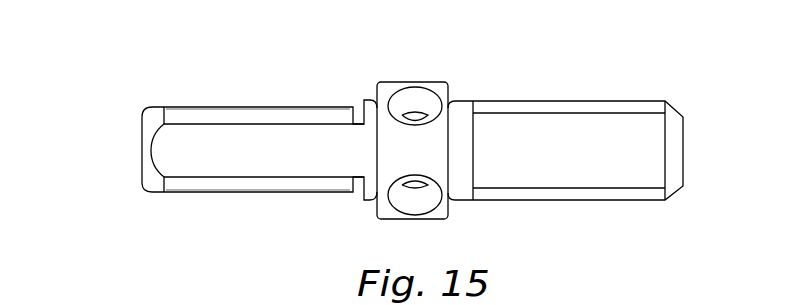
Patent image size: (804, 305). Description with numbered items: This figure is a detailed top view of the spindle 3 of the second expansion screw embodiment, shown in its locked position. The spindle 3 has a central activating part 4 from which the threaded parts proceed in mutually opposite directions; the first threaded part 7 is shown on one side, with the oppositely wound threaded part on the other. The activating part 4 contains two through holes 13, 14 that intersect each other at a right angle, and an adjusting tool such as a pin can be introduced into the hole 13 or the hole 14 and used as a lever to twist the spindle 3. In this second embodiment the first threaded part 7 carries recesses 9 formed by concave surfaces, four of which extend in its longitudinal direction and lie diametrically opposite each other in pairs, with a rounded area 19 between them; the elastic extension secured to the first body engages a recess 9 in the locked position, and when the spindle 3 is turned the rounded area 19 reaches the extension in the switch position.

The spindle 3 is at (633, 122).
The activating part 4 is at (442, 123).
The first threaded part 7 is at (150, 128).
The recess 9 is at (178, 155).
The through hole 13 is at (402, 202).
The through hole 14 is at (420, 103).
The rounded area 19 is at (178, 113).